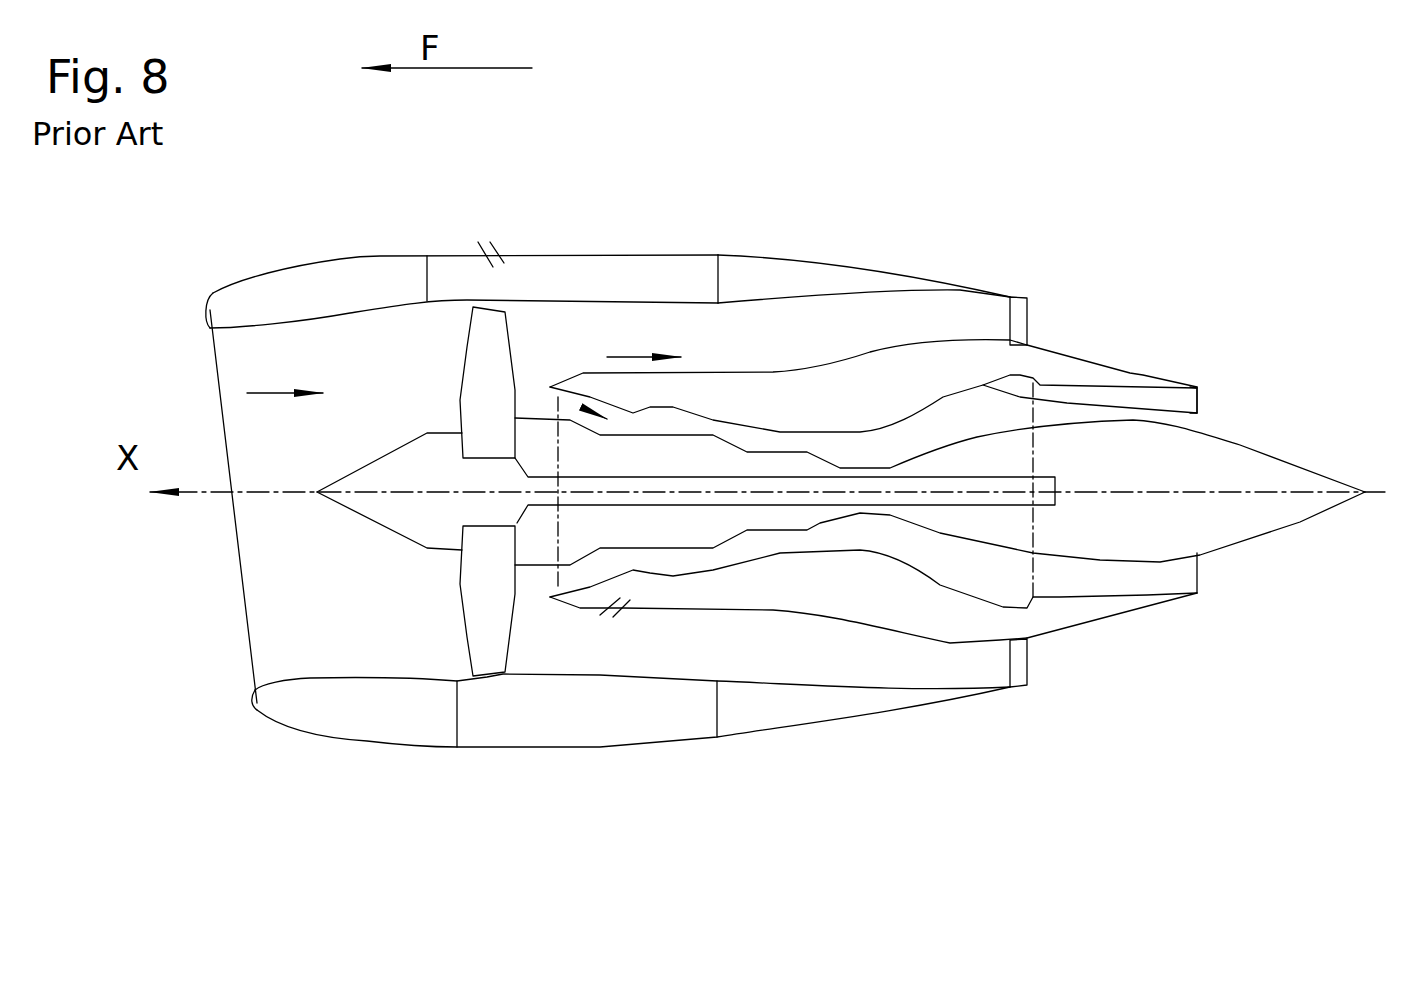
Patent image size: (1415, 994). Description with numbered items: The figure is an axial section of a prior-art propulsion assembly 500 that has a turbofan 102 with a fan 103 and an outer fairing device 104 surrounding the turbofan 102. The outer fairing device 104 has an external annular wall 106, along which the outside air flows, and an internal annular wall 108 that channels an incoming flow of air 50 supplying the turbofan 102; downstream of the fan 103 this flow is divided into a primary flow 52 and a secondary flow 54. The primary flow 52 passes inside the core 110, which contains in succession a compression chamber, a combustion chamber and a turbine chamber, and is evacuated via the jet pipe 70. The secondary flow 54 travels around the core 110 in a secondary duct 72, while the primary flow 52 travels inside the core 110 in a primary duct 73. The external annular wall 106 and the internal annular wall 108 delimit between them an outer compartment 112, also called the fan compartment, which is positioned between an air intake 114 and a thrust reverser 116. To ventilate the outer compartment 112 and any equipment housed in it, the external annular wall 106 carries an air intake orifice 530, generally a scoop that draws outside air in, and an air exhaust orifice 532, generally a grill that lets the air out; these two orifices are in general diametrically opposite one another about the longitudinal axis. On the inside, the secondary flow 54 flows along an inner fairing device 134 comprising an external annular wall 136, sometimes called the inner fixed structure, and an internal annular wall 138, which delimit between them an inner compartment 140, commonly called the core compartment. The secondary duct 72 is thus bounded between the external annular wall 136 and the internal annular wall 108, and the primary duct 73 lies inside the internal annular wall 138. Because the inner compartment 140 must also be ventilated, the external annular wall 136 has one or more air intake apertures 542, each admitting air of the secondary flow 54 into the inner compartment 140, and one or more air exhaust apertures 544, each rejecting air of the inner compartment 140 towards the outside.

The propulsion assembly 500 is at (1170, 134).
The turbofan 102 is at (1234, 746).
The outer fairing device 104 is at (668, 165).
The external annular wall 106 is at (317, 733).
The internal annular wall 108 is at (305, 678).
The core 110 is at (1239, 597).
The outer compartment 112 is at (467, 267).
The air intake 114 is at (250, 315).
The thrust reverser 116 is at (912, 276).
The inner fairing device 134 is at (848, 360).
The external annular wall 136 is at (960, 340).
The internal annular wall 138 is at (1193, 415).
The inner compartment 140 is at (780, 393).
The air exhaust aperture 544 is at (1132, 373).
The air intake orifice 530 is at (493, 254).
The air exhaust orifice 532 is at (700, 737).
The air intake aperture 542 is at (623, 620).
The primary flow 52 is at (545, 390).
The fan 103 is at (475, 598).
The secondary flow 54 is at (644, 337).
The incoming flow of air 50 is at (285, 372).
The jet pipe 70 is at (1187, 572).
The secondary duct 72 is at (867, 663).
The primary duct 73 is at (943, 417).